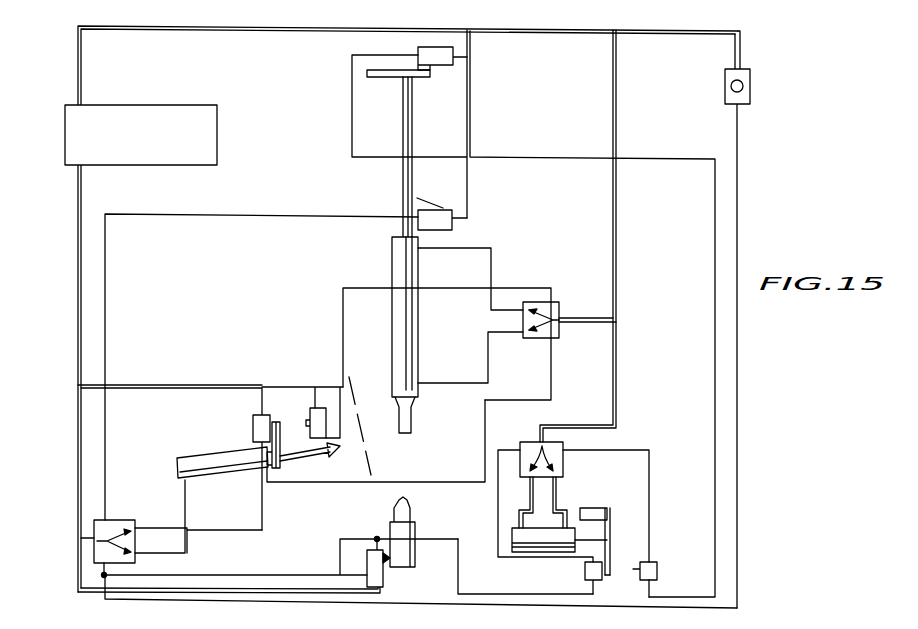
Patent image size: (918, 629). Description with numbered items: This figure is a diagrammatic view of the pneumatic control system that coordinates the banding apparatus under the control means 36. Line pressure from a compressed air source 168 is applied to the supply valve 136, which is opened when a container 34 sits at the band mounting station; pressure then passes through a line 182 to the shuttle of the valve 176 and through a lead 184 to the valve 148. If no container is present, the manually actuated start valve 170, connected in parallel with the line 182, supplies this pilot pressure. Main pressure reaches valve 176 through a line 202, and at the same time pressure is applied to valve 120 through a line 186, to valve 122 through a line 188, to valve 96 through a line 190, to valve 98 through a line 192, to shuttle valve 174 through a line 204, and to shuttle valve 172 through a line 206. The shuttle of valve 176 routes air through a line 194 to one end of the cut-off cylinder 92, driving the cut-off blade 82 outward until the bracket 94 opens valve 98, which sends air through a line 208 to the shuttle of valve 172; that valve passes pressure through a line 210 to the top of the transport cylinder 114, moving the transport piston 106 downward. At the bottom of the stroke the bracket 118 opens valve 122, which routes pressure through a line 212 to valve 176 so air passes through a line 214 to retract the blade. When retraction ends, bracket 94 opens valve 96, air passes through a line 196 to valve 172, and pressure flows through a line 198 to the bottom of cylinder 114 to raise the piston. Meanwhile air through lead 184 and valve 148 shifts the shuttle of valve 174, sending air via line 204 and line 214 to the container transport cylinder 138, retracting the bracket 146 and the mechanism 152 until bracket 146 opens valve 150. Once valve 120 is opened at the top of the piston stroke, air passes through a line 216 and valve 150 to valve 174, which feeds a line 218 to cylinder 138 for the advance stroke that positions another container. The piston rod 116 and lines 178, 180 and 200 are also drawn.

The container 34 is at (413, 528).
The control means 36 is at (563, 300).
The cut-off blade 82 is at (324, 447).
The cut-off cylinder 92 is at (197, 462).
The bracket 94 is at (283, 430).
The valve 96 is at (253, 425).
The valve 98 is at (323, 407).
The transport piston 106 is at (412, 428).
The transport cylinder 114 is at (418, 314).
The piston rod 116 is at (405, 130).
The bracket 118 is at (380, 78).
The valve 120 is at (440, 47).
The valve 122 is at (448, 230).
The supply valve 136 is at (385, 584).
The container transport cylinder 138 is at (522, 552).
The bracket 146 is at (610, 557).
The valve 148 is at (585, 575).
The valve 150 is at (657, 572).
The mechanism 152 is at (597, 508).
The compressed air source 168 is at (218, 125).
The start valve 170 is at (750, 82).
The shuttle valve 172 is at (559, 333).
The shuttle valve 174 is at (525, 442).
The valve 176 is at (120, 520).
The conduit 178 is at (660, 30).
The conduit 180 is at (445, 603).
The line 182 is at (266, 570).
The lead 184 is at (479, 526).
The line 186 is at (232, 30).
The line 188 is at (471, 80).
The line 190 is at (163, 385).
The line 192 is at (286, 385).
The line 194 is at (186, 496).
The line 196 is at (437, 476).
The line 198 is at (452, 383).
The conduit 200 is at (638, 450).
The line 202 is at (88, 538).
The line 204 is at (617, 348).
The line 206 is at (614, 300).
The line 208 is at (355, 288).
The line 210 is at (491, 258).
The line 212 is at (256, 214).
The line 214 is at (218, 530).
The line 216 is at (540, 157).
The line 218 is at (553, 494).